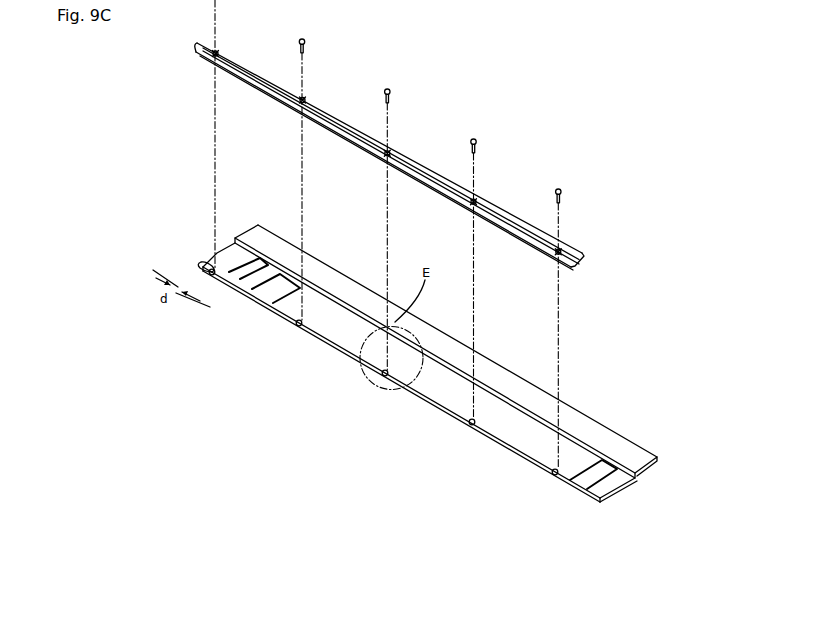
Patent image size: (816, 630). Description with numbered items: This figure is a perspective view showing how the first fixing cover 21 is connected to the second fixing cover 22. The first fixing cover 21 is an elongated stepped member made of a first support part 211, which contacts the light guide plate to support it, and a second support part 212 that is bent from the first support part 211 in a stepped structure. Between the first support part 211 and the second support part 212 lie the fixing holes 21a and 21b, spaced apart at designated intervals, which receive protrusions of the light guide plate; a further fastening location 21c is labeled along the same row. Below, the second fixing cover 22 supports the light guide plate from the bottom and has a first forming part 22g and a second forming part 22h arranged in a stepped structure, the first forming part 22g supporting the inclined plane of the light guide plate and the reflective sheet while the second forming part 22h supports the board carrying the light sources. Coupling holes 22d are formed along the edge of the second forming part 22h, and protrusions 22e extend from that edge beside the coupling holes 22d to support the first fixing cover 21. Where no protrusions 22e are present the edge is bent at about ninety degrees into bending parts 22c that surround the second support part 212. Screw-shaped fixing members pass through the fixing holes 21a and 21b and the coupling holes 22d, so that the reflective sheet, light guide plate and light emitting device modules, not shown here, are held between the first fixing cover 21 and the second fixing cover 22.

The first fixing cover 21 is at (433, 177).
The fixing hole 21a is at (304, 98).
The fixing hole 21b is at (389, 150).
The rail fastener 21c is at (218, 51).
The first support part 211 is at (522, 227).
The second support part 212 is at (537, 249).
The second fixing cover 22 is at (413, 347).
The bending part 22c is at (360, 285).
The coupling hole 22d is at (210, 265).
The protrusion 22e is at (402, 387).
The first forming part 22g is at (418, 332).
The second forming part 22h is at (450, 387).